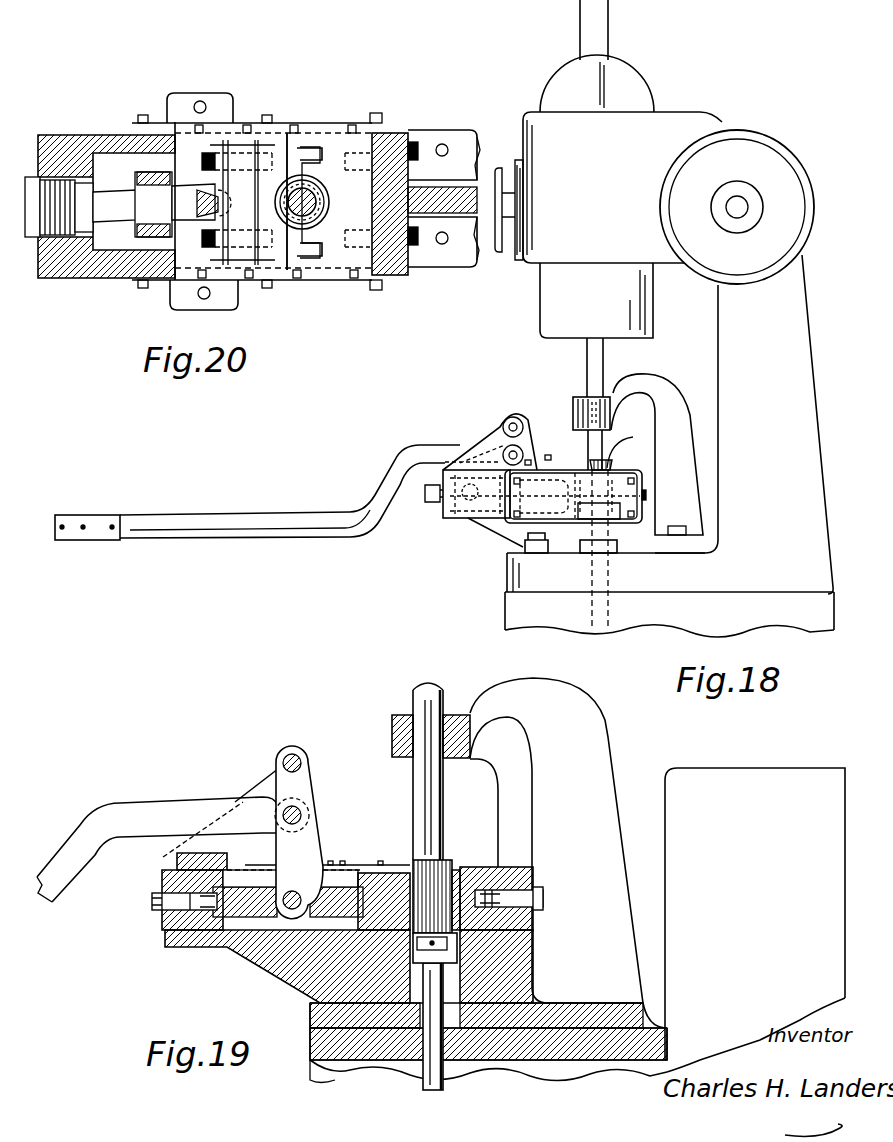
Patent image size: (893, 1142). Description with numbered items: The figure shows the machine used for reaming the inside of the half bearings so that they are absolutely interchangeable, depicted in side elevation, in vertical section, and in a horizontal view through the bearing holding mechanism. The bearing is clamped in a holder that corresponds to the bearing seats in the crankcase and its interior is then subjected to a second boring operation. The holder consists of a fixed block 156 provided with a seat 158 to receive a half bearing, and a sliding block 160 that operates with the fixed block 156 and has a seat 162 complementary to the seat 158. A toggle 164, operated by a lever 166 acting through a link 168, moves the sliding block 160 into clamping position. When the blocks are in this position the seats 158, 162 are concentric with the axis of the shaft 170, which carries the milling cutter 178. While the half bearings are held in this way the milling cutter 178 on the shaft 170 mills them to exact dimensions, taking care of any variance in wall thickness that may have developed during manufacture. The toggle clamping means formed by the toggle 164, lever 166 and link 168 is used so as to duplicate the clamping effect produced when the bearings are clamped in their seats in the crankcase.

In FIG. 20, the fixed block 156 is at (360, 148).
In FIG. 19, the fixed block 156 is at (472, 867).
In FIG. 20, the seat 158 is at (318, 183).
In FIG. 18, the seat 158 is at (633, 488).
In FIG. 19, the seat 158 is at (455, 908).
In FIG. 20, the sliding block 160 is at (290, 145).
In FIG. 18, the sliding block 160 is at (580, 483).
In FIG. 19, the sliding block 160 is at (370, 865).
In FIG. 20, the seat 162 is at (290, 262).
In FIG. 19, the seat 162 is at (405, 873).
In FIG. 20, the toggle 164 is at (130, 213).
In FIG. 18, the toggle 164 is at (480, 520).
In FIG. 19, the toggle 164 is at (240, 917).
In FIG. 18, the lever 166 is at (315, 518).
In FIG. 19, the lever 166 is at (197, 803).
In FIG. 18, the link 168 is at (528, 432).
In FIG. 19, the link 168 is at (300, 843).
In FIG. 20, the shaft 170 is at (318, 210).
In FIG. 18, the shaft 170 is at (603, 378).
In FIG. 19, the shaft 170 is at (440, 690).
In FIG. 20, the milling cutter 178 is at (325, 194).
In FIG. 18, the milling cutter 178 is at (605, 465).
In FIG. 19, the milling cutter 178 is at (445, 925).